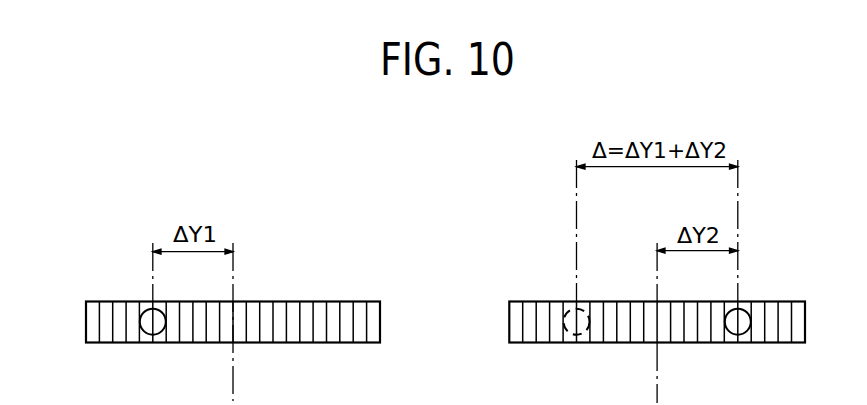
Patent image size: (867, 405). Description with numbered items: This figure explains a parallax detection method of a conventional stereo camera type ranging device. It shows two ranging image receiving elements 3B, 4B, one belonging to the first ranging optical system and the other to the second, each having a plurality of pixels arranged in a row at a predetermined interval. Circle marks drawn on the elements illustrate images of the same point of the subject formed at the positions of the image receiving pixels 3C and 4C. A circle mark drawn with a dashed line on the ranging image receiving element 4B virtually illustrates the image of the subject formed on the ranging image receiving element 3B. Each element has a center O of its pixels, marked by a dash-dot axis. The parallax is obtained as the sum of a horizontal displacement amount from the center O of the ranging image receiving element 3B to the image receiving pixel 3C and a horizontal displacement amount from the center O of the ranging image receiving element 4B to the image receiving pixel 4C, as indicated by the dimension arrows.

The ranging image receiving element 3B is at (332, 301).
The image receiving pixel 3C is at (150, 336).
The ranging image receiving element 4B is at (768, 301).
The image receiving pixel 4C is at (731, 336).
The center of the pixels O is at (233, 345).